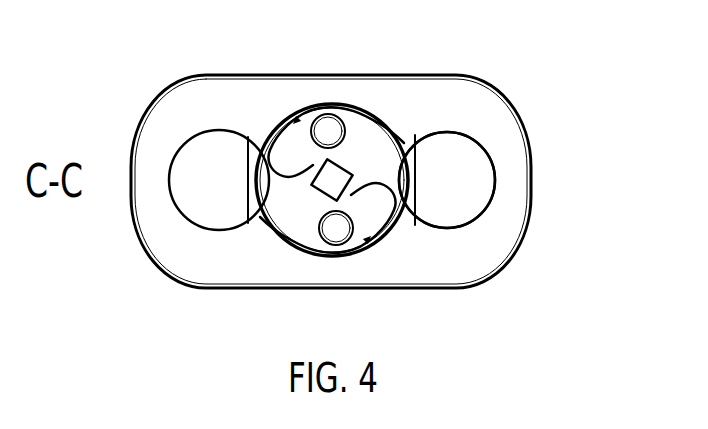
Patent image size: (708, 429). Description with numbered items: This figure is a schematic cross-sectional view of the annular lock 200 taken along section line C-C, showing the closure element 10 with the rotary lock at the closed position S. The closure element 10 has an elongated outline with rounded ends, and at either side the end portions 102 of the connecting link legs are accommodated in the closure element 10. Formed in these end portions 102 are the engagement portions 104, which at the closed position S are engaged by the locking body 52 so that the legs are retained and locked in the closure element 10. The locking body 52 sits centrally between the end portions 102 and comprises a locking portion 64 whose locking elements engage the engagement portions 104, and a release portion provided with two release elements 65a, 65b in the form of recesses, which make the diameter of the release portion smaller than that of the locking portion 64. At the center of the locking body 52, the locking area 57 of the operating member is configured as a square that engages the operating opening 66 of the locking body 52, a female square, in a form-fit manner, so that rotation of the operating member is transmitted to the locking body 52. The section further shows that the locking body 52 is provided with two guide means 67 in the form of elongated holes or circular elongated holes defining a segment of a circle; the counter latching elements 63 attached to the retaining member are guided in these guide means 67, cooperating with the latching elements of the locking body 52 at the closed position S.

The closure element 10 is at (161, 248).
The end portions 102 is at (197, 150).
The engagement portions 104 is at (250, 136).
The locking body 52 is at (445, 133).
The locking area 57 is at (279, 146).
The counter latching elements 63 is at (329, 131).
The locking portion 64 is at (262, 185).
The release element 65a is at (311, 238).
The release element 65b is at (380, 124).
The operating opening 66 is at (328, 178).
The guide means 67 is at (297, 120).
The annular lock 200 is at (538, 70).
The closed position S is at (565, 86).